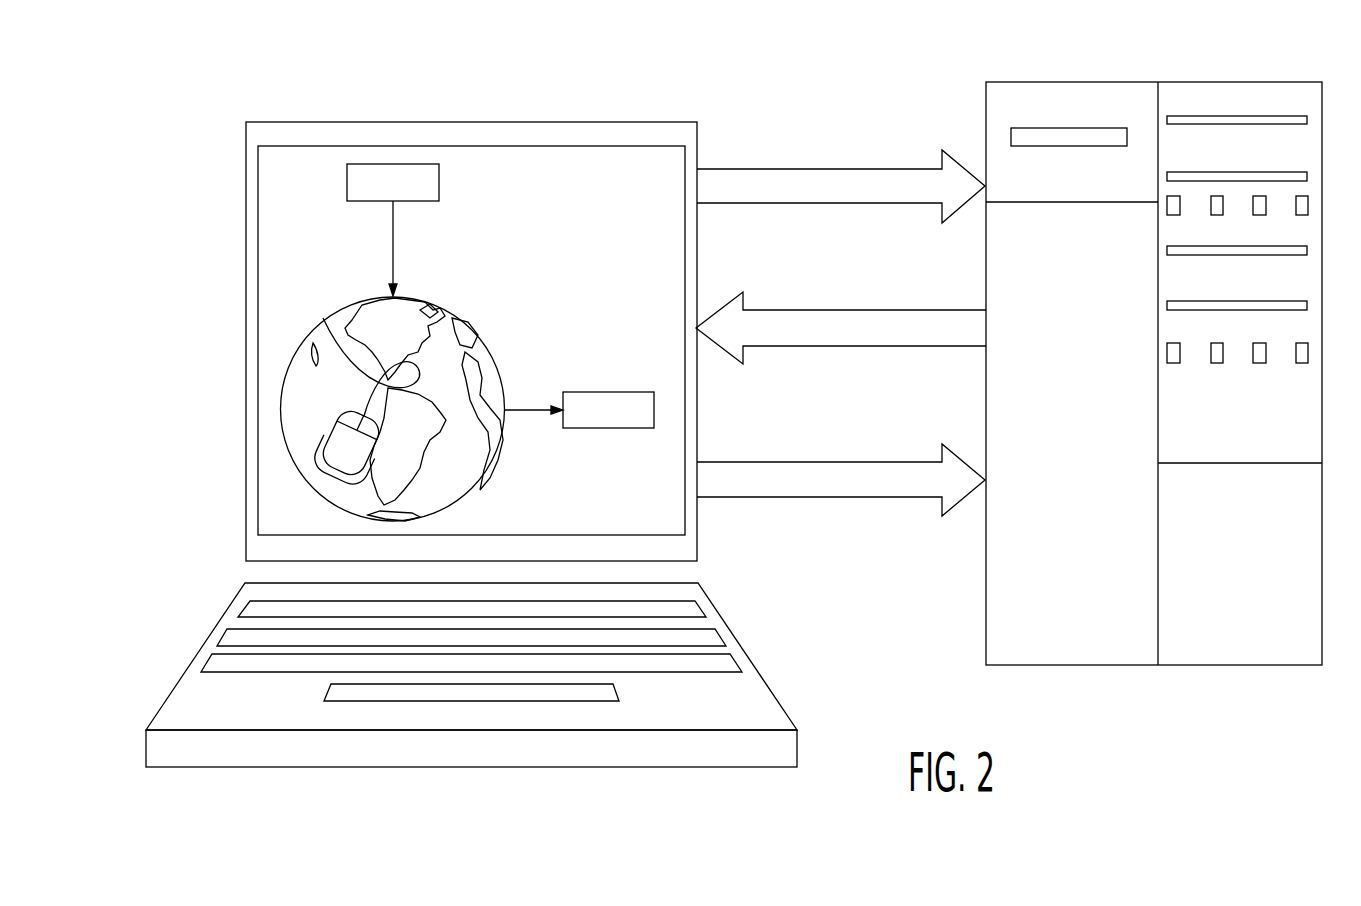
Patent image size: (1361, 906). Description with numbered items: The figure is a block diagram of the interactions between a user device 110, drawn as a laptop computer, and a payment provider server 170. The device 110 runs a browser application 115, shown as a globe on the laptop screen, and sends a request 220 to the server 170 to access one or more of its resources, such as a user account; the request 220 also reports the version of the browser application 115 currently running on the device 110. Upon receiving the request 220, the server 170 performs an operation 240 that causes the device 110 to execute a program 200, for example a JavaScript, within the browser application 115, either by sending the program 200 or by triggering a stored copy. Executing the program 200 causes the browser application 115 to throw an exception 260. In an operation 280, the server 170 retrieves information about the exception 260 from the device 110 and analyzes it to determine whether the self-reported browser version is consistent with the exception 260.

The user device 110 is at (573, 122).
The browser application 115 is at (343, 307).
The payment provider server 170 is at (1127, 81).
The program 200 is at (377, 193).
The request 220 is at (832, 168).
The operation 240 is at (841, 309).
The exception 260 is at (624, 421).
The operation 280 is at (814, 461).